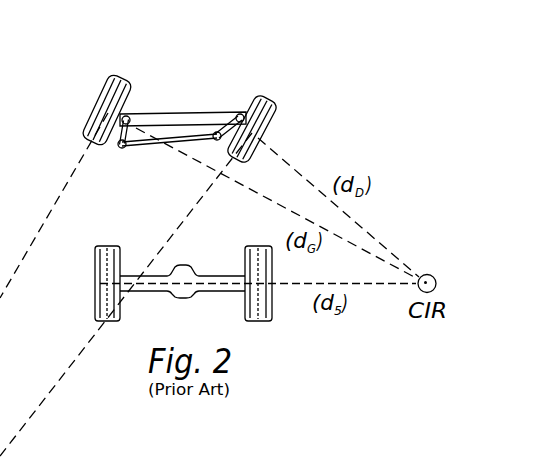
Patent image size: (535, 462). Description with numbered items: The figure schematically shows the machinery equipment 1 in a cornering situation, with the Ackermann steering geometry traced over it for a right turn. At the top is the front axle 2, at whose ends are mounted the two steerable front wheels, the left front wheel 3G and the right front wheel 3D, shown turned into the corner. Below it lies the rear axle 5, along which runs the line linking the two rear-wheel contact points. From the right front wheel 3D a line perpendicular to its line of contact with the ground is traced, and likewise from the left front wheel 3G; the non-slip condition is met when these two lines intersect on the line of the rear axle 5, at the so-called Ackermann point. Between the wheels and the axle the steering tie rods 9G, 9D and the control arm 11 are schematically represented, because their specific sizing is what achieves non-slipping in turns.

The machinery equipment 1 is at (270, 70).
The front axle 2 is at (186, 114).
The left front wheel 3G is at (121, 77).
The right front wheel 3D is at (271, 102).
The rear axle 5 is at (220, 277).
The left steering tie rod 9G is at (118, 148).
The right steering tie rod 9D is at (218, 141).
The control arm 11 is at (147, 142).